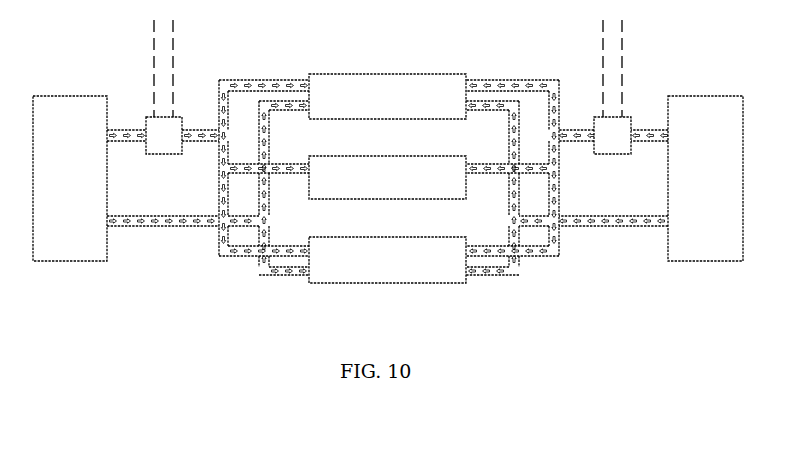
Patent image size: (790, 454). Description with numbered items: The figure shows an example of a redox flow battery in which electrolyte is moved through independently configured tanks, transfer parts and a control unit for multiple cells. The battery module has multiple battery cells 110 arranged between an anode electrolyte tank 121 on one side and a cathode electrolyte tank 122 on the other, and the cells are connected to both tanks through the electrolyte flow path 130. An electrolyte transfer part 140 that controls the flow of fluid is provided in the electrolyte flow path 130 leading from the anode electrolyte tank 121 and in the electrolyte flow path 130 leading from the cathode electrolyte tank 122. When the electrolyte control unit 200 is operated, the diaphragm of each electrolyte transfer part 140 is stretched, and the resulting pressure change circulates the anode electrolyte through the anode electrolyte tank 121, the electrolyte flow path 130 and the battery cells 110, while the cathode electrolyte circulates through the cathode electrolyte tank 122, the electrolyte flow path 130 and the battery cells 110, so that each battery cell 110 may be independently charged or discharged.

The battery cell 110 is at (345, 175).
The anode electrolyte tank 121 is at (69, 253).
The cathode electrolyte tank 122 is at (711, 253).
The electrolyte flow path 130 is at (279, 80).
The electrolyte transfer part 140 is at (153, 120).
The electrolyte control unit 200 is at (173, 80).